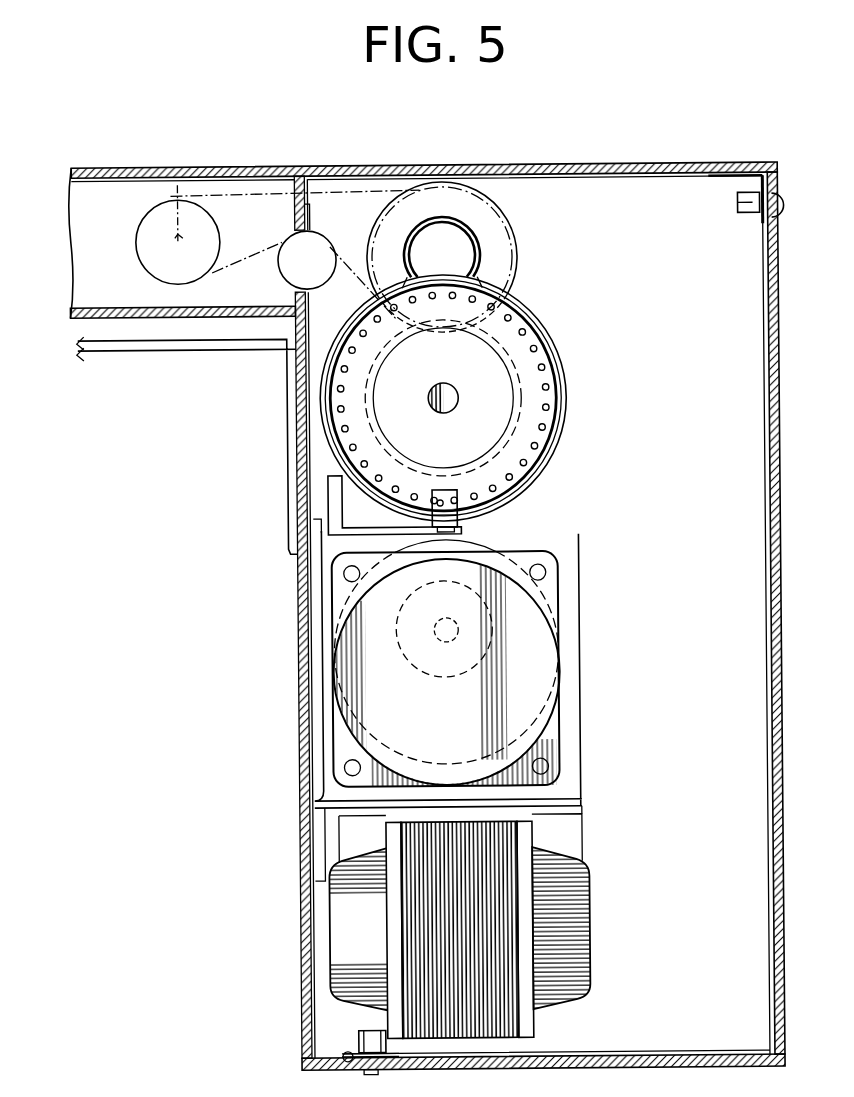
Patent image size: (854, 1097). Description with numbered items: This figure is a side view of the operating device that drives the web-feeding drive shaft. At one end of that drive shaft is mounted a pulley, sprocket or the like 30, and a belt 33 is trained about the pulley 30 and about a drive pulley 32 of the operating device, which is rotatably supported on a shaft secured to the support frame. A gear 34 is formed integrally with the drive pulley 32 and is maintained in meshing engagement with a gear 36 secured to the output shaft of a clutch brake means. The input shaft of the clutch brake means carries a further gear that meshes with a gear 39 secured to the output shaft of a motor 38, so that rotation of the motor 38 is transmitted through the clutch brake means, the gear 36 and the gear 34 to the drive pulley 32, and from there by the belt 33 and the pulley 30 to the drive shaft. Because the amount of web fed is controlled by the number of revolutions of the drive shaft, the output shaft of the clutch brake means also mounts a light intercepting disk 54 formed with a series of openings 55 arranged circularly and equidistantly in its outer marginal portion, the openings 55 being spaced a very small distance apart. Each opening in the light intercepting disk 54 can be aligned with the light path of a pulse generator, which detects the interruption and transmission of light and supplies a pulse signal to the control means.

The pulley 30 is at (181, 190).
The belt 33 is at (278, 192).
The drive pulley 32 is at (441, 184).
The gear 34 is at (481, 192).
The gear 36 is at (517, 371).
The light intercepting disk 54 is at (340, 397).
The openings 55 is at (343, 437).
The gear 39 is at (512, 537).
The motor 38 is at (563, 638).